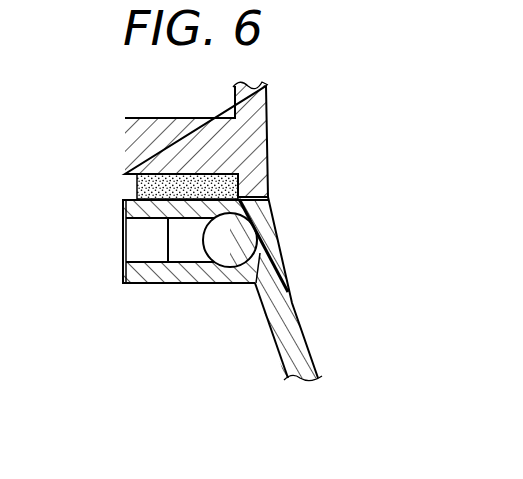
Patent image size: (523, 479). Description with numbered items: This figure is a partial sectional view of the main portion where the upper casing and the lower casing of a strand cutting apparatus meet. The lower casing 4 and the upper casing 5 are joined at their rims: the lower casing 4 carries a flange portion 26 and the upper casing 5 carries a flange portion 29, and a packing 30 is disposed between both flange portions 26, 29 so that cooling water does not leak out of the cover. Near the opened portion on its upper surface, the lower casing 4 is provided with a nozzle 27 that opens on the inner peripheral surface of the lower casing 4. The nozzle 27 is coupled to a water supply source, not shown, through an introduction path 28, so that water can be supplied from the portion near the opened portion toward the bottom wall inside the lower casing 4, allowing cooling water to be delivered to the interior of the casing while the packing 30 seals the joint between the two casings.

The lower casing 4 is at (265, 320).
The upper casing 5 is at (269, 122).
The flange portion 26 is at (150, 284).
The nozzle 27 is at (287, 278).
The introduction path 28 is at (130, 249).
The flange portion 29 is at (150, 117).
The packing 30 is at (134, 185).